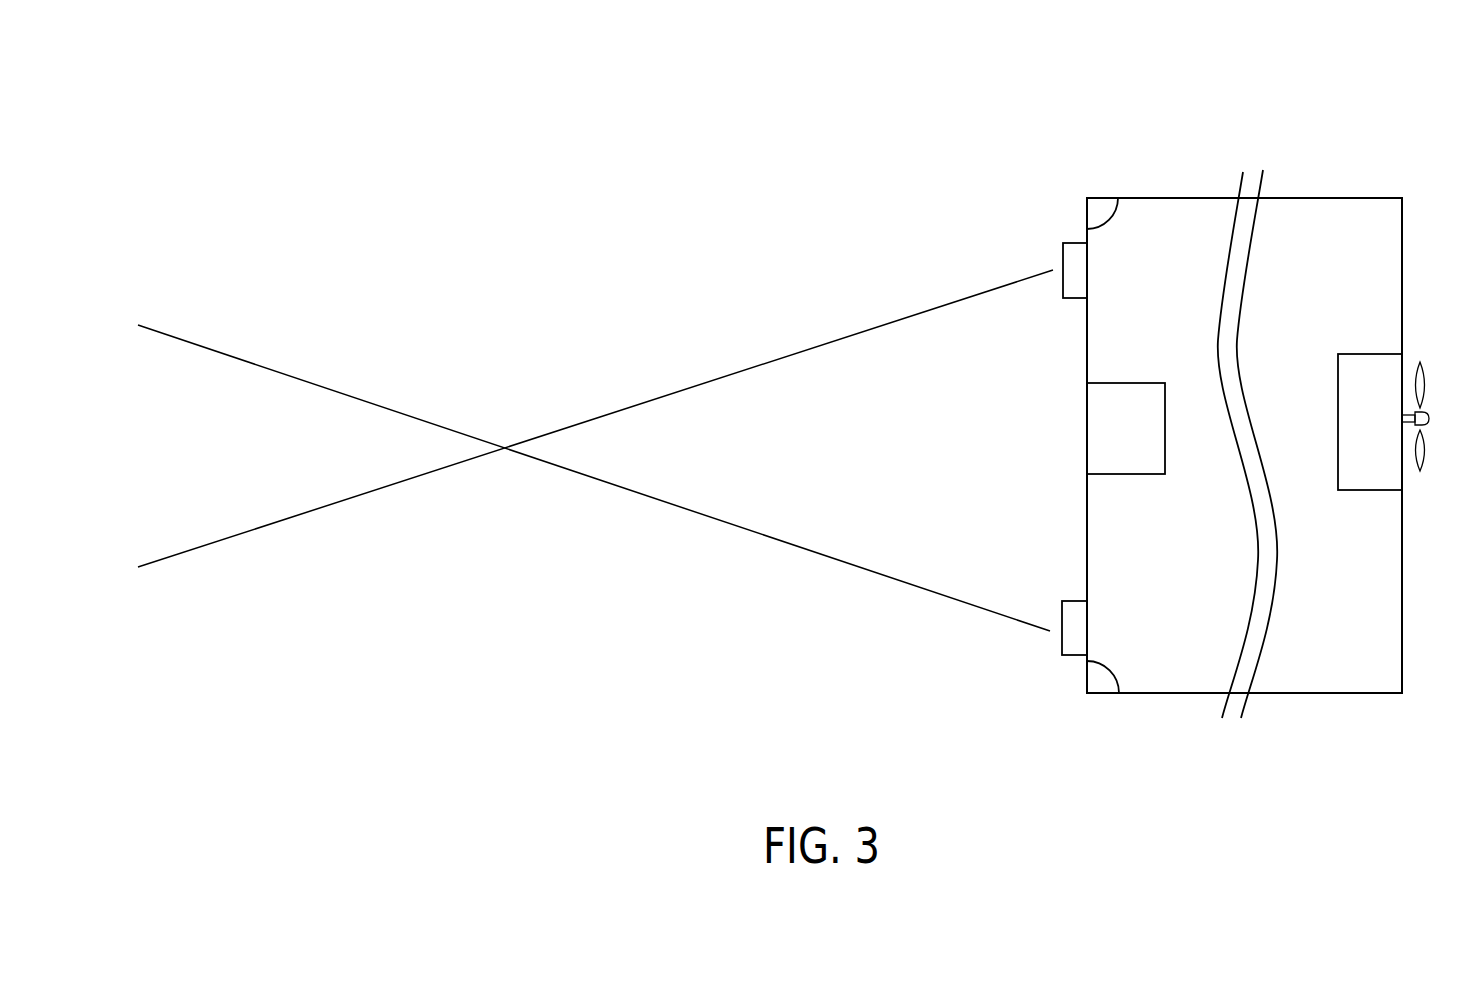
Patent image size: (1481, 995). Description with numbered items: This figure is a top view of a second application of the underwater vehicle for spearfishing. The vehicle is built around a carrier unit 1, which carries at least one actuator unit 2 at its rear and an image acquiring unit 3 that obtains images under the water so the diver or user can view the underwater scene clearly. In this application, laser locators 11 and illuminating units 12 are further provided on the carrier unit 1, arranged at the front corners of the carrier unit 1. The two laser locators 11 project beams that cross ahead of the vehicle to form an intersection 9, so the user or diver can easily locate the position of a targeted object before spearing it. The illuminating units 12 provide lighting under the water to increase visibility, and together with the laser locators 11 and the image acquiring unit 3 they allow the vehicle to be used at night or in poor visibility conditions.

The carrier unit 1 is at (1317, 196).
The actuator unit 2 is at (1390, 344).
The image acquiring unit 3 is at (1133, 372).
The intersection 9 is at (500, 448).
The laser locators 11 is at (1070, 263).
The illuminating units 12 is at (1099, 213).